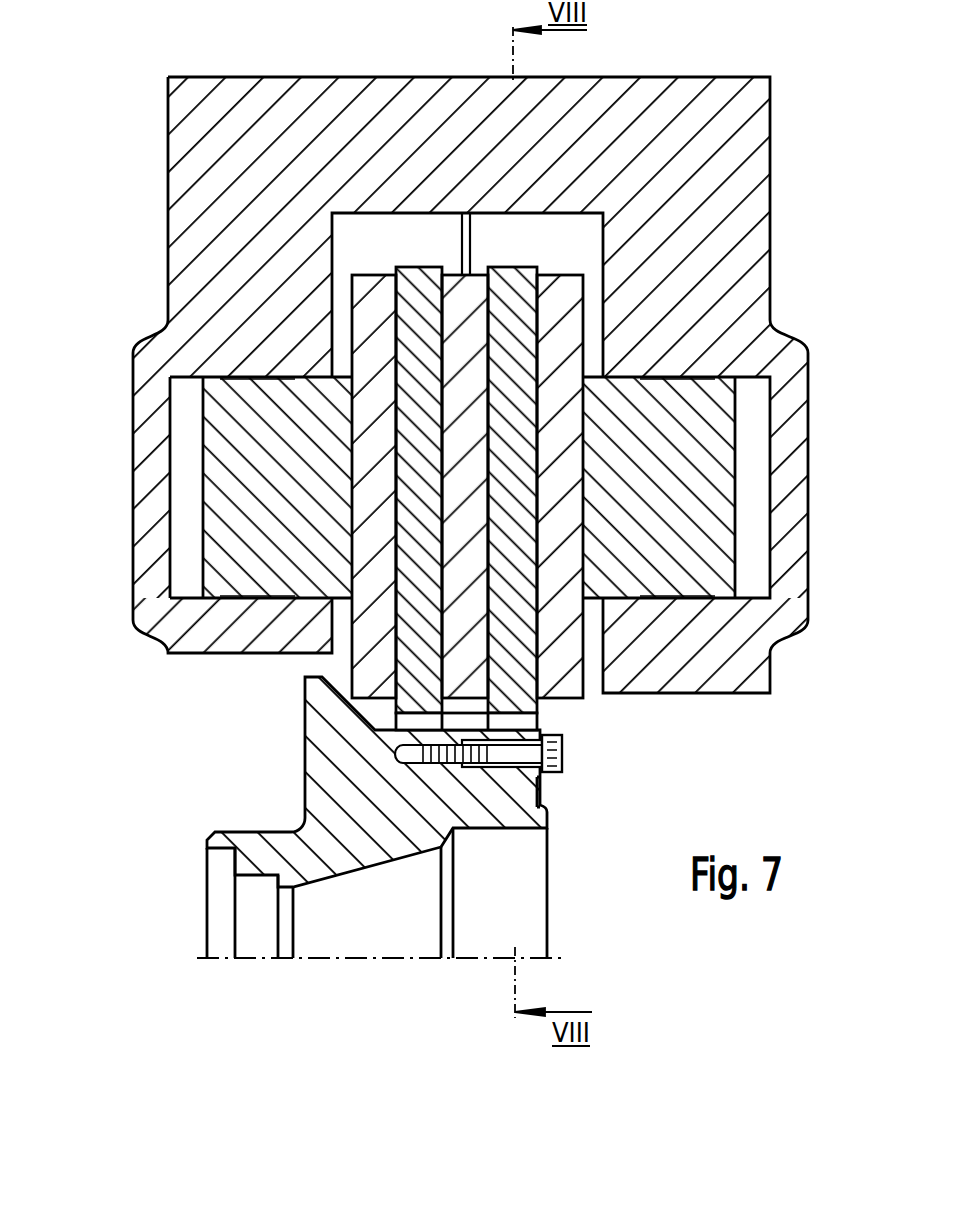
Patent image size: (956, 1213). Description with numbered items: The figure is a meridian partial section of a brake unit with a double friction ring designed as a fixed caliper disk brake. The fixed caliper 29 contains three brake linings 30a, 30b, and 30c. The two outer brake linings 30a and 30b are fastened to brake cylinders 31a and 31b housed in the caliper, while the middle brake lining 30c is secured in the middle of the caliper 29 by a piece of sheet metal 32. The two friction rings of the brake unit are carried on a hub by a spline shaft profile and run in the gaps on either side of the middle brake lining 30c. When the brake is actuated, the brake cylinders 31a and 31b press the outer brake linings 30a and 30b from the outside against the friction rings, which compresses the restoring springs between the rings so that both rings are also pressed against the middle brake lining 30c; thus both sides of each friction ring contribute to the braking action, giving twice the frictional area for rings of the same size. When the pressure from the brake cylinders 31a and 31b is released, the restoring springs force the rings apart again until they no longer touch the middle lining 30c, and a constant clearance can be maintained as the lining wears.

The fixed caliper 29 is at (731, 154).
The brake cylinder 31a is at (232, 453).
The brake cylinder 31b is at (703, 450).
The outer brake lining 30a is at (374, 287).
The outer brake lining 30b is at (567, 285).
The middle brake lining 30c is at (473, 288).
The piece of sheet metal 32 is at (461, 230).